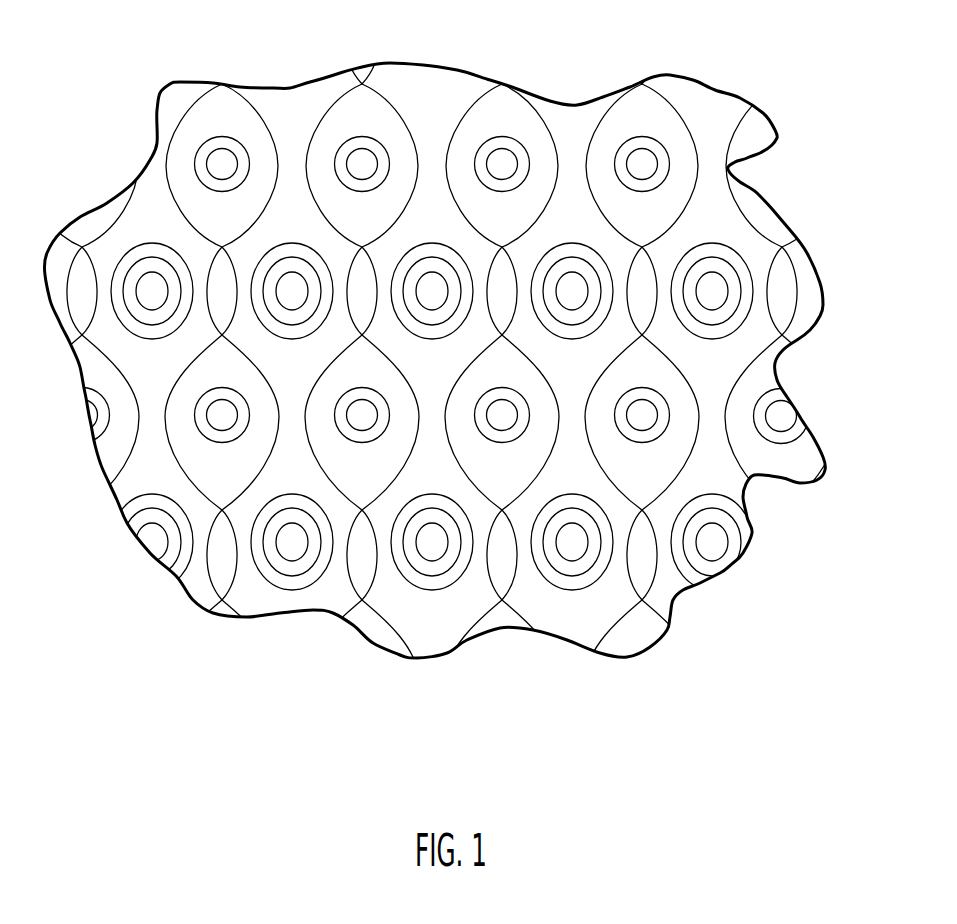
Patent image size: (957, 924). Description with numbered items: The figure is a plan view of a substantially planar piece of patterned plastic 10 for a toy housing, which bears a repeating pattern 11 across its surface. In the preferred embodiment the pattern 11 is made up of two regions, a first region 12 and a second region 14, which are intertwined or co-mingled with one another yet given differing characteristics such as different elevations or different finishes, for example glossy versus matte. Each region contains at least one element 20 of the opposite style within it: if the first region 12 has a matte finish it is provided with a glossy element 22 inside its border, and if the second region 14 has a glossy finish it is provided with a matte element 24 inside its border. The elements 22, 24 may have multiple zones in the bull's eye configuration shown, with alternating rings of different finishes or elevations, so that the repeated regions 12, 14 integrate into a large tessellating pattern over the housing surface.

The patterned plastic 10 is at (432, 374).
The repeating pattern 11 is at (385, 648).
The first region 12 is at (288, 600).
The second region 14 is at (503, 458).
The element 20 is at (210, 428).
The glossy element 22 is at (438, 592).
The matte element 24 is at (740, 573).